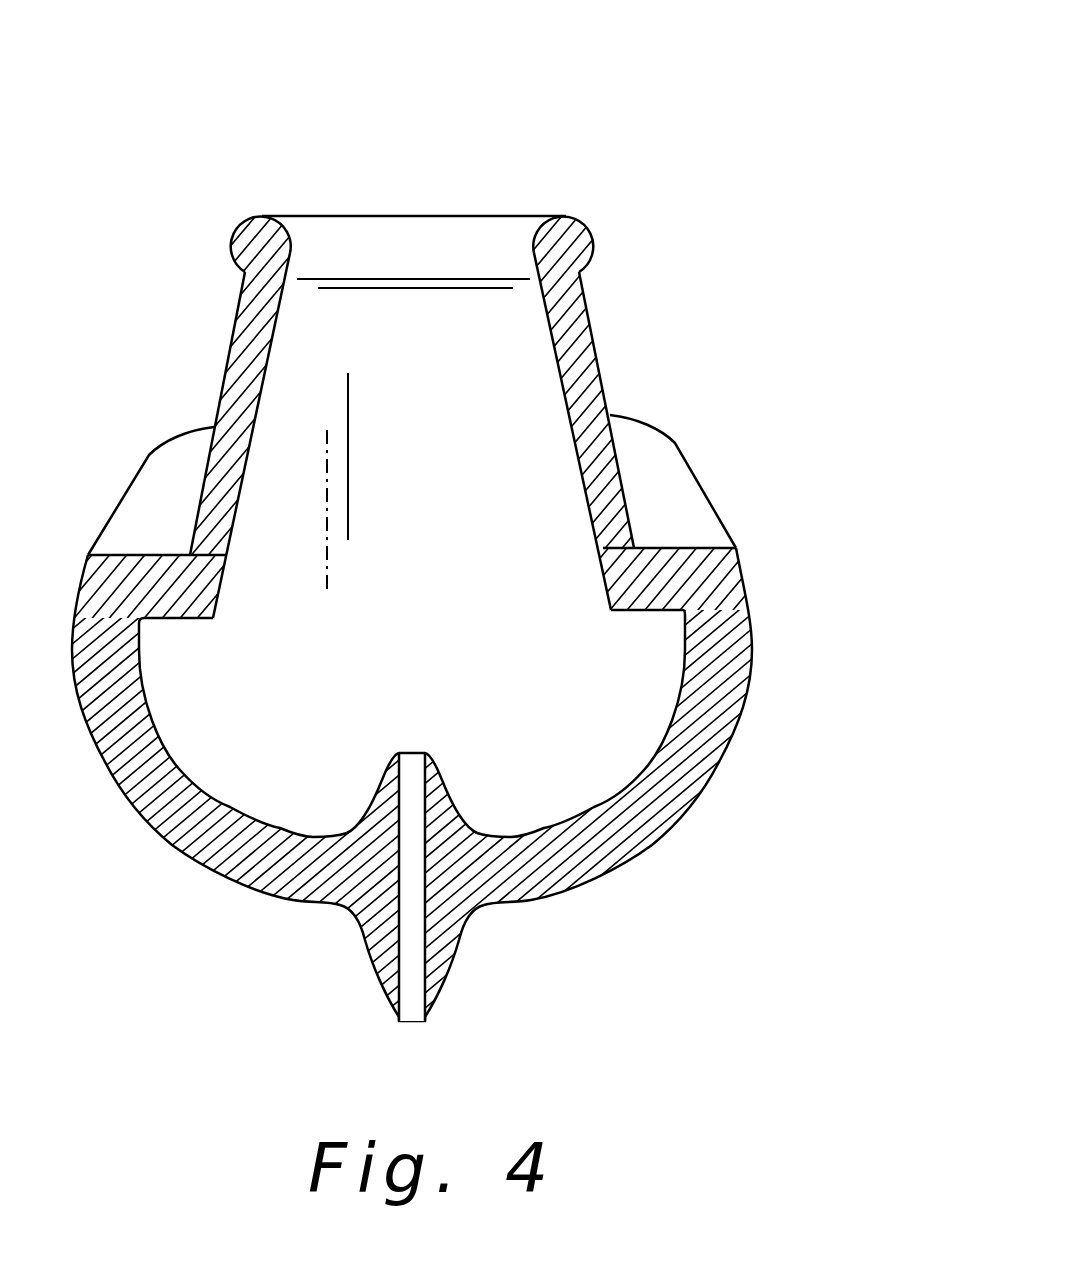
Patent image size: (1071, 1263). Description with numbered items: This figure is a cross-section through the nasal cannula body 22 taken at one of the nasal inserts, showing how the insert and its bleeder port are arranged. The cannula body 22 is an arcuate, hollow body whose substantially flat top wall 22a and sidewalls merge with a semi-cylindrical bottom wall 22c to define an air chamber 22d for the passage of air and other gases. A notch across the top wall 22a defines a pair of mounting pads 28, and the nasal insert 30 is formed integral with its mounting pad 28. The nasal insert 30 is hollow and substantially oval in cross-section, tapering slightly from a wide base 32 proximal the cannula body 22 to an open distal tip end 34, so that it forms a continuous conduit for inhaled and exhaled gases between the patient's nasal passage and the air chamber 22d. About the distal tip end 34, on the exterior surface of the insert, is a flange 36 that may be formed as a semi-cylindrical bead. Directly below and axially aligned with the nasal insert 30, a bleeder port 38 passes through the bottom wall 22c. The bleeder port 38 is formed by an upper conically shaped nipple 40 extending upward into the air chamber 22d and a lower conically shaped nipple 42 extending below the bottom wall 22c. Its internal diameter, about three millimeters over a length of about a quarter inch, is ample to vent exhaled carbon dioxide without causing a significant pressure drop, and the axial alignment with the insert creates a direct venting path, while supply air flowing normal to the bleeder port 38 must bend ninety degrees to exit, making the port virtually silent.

The nasal cannula body 22 is at (536, 152).
The top wall 22a is at (737, 563).
The bottom wall 22c is at (298, 902).
The air chamber 22d is at (580, 758).
The mounting pad 28 is at (670, 477).
The nasal insert 30 is at (235, 335).
The base 32 is at (632, 533).
The distal tip end 34 is at (400, 258).
The flange 36 is at (592, 230).
The bleeder port 38 is at (412, 770).
The upper nipple 40 is at (367, 812).
The lower nipple 42 is at (450, 960).